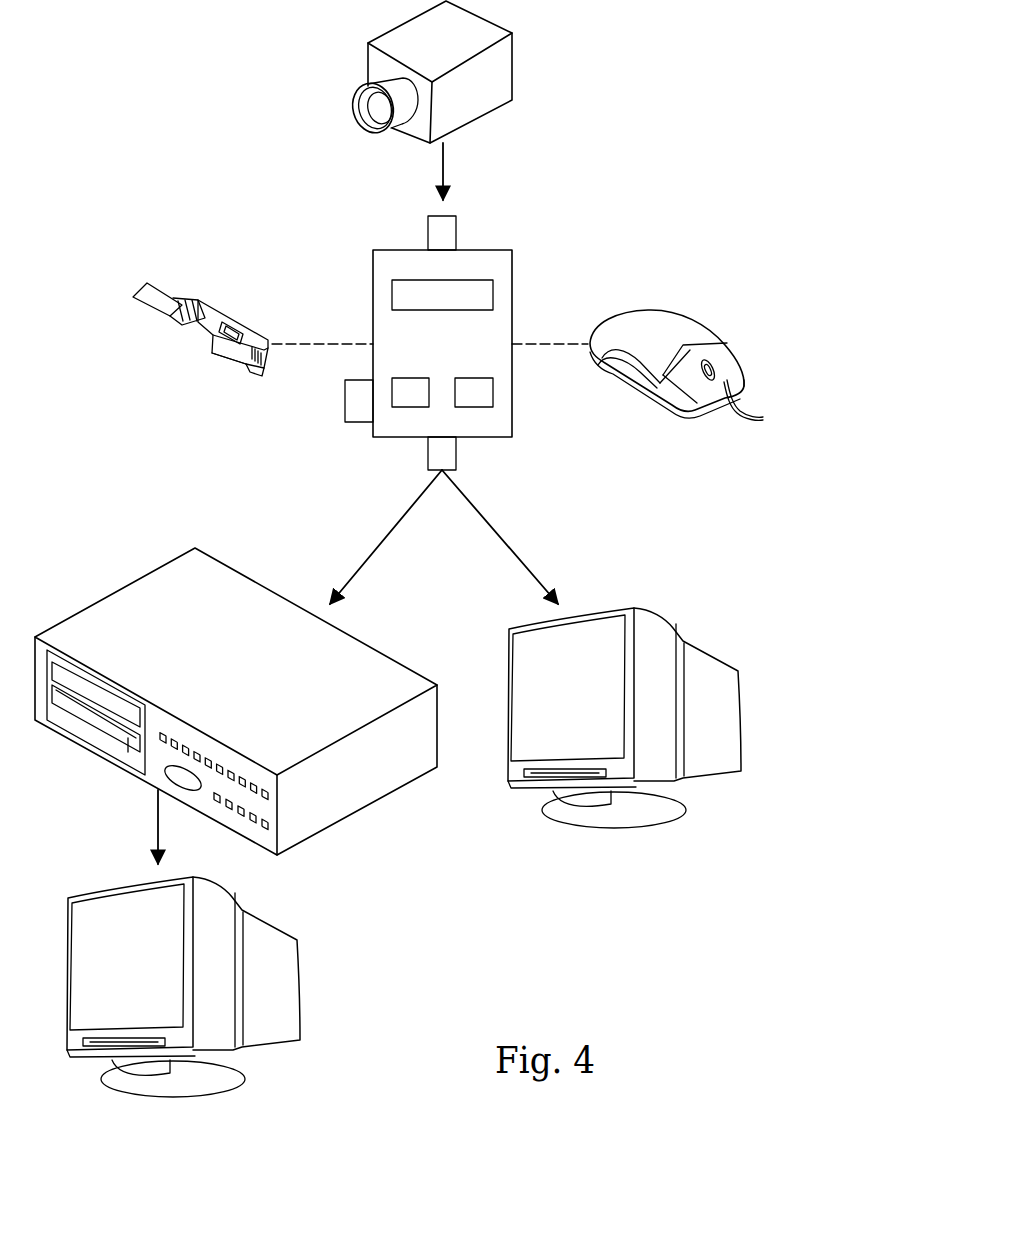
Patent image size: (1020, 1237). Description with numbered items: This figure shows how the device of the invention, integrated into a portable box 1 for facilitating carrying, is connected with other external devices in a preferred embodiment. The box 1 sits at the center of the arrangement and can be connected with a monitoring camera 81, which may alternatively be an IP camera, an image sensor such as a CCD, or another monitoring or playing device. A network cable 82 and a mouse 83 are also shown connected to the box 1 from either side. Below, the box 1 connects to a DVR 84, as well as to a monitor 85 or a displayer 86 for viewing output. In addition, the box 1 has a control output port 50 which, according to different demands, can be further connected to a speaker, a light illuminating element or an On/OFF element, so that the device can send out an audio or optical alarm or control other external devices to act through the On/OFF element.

The box 1 is at (484, 250).
The control output port 50 is at (345, 398).
The monitoring camera 81 is at (368, 64).
The network cable 82 is at (220, 310).
The mouse 83 is at (657, 310).
The DVR 84 is at (153, 568).
The monitor 85 is at (300, 978).
The displayer 86 is at (654, 610).